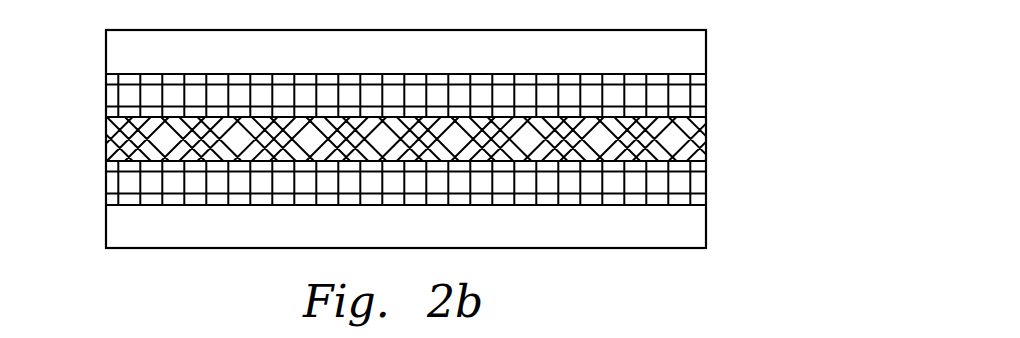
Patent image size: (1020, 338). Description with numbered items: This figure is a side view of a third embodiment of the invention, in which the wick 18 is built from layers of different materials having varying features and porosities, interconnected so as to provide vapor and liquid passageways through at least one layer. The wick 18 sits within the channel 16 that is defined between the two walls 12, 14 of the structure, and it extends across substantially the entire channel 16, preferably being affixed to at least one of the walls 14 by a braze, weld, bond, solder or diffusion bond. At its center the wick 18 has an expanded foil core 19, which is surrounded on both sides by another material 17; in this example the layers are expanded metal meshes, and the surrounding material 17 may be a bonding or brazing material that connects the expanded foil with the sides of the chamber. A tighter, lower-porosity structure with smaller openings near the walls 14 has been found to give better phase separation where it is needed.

The wall 12 is at (645, 65).
The wall 14 is at (645, 240).
The channel 16 is at (697, 76).
The another material 17 is at (505, 107).
The wick 18 is at (385, 139).
The expanded foil core 19 is at (425, 152).